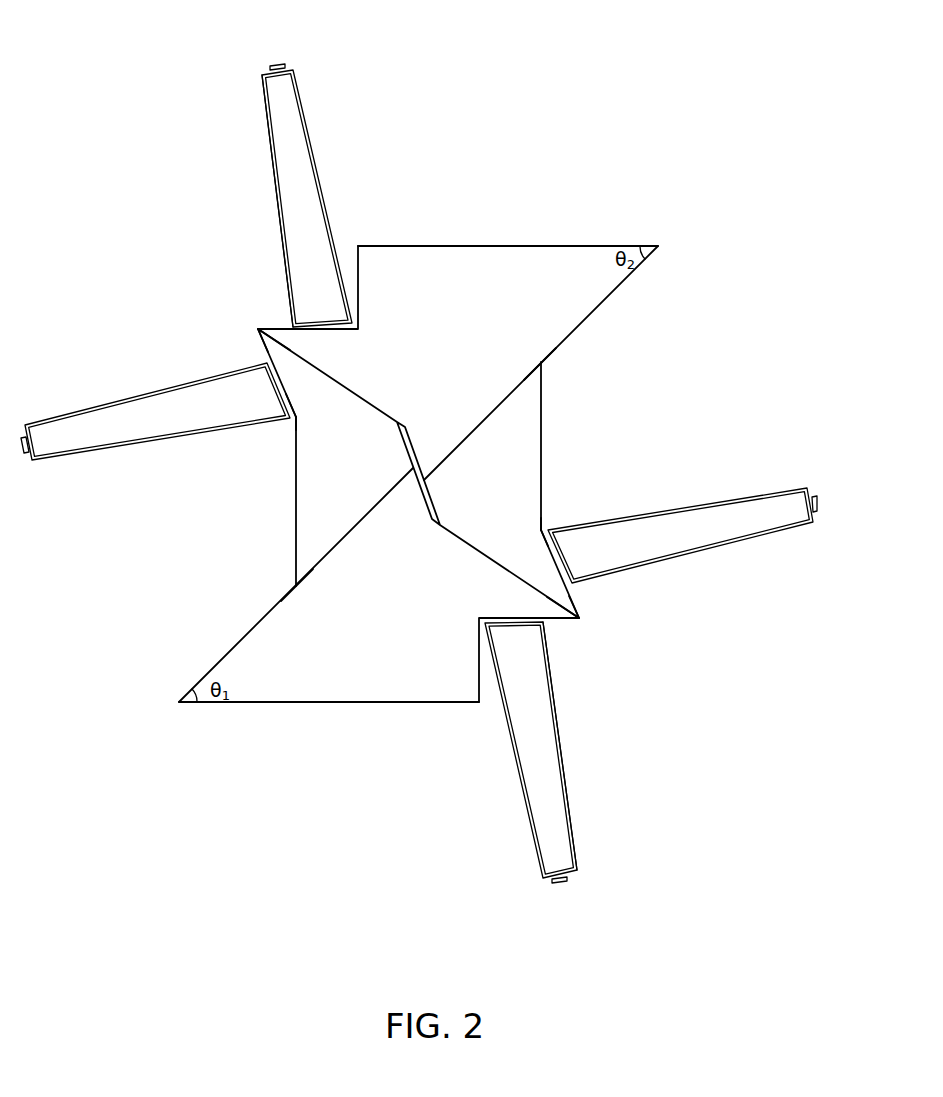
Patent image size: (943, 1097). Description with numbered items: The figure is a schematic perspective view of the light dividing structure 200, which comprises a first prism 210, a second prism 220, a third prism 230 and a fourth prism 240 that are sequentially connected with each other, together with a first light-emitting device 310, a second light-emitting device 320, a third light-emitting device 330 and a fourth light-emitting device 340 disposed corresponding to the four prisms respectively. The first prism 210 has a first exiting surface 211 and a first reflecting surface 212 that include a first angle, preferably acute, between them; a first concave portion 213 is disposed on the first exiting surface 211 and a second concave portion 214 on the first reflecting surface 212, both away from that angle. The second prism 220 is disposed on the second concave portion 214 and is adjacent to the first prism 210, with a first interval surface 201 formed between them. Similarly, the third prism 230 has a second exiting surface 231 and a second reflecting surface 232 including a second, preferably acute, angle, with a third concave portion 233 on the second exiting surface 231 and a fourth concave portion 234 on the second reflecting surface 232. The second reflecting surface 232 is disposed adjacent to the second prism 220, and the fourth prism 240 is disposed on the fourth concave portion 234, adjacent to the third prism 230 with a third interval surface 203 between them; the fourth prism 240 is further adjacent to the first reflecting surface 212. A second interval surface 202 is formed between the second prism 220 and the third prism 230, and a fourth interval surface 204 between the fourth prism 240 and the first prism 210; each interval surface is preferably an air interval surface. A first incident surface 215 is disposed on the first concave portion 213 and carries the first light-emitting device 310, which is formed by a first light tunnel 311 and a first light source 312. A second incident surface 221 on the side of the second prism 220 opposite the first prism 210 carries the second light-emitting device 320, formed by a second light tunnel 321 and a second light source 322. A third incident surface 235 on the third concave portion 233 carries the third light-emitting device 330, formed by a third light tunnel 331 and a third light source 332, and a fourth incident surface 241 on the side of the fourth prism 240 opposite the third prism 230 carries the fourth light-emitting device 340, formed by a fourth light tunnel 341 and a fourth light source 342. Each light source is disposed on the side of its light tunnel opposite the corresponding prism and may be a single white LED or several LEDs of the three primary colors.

The light dividing structure 200 is at (125, 22).
The first interval surface 201 is at (580, 617).
The second interval surface 202 is at (525, 382).
The third interval surface 203 is at (257, 328).
The fourth interval surface 204 is at (310, 572).
The first prism 210 is at (429, 669).
The first exiting surface 211 is at (330, 705).
The first reflecting surface 212 is at (253, 628).
The first concave portion 213 is at (562, 660).
The second concave portion 214 is at (573, 588).
The first incident surface 215 is at (540, 621).
The second prism 220 is at (570, 454).
The second incident surface 221 is at (548, 528).
The third prism 230 is at (427, 277).
The second exiting surface 231 is at (552, 243).
The second reflecting surface 232 is at (612, 296).
The third concave portion 233 is at (277, 270).
The fourth concave portion 234 is at (255, 360).
The third incident surface 235 is at (293, 325).
The fourth prism 240 is at (270, 490).
The fourth incident surface 241 is at (292, 420).
The first light-emitting device 310 is at (588, 752).
The first light tunnel 311 is at (560, 808).
The first light source 312 is at (567, 878).
The second light-emitting device 320 is at (688, 490).
The second light tunnel 321 is at (748, 508).
The second light source 322 is at (812, 490).
The third light-emitting device 330 is at (340, 187).
The third light tunnel 331 is at (290, 118).
The third light source 332 is at (284, 66).
The fourth light-emitting device 340 is at (153, 465).
The fourth light tunnel 341 is at (107, 437).
The fourth light source 342 is at (35, 479).